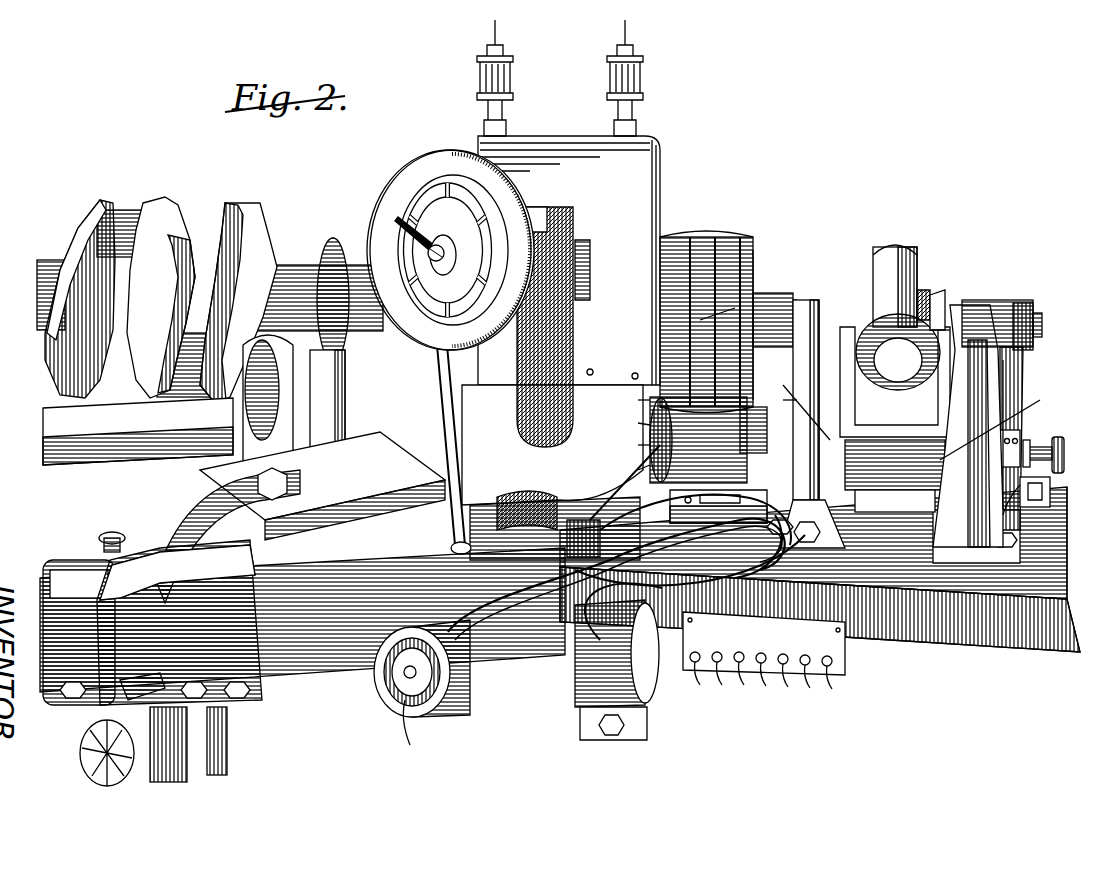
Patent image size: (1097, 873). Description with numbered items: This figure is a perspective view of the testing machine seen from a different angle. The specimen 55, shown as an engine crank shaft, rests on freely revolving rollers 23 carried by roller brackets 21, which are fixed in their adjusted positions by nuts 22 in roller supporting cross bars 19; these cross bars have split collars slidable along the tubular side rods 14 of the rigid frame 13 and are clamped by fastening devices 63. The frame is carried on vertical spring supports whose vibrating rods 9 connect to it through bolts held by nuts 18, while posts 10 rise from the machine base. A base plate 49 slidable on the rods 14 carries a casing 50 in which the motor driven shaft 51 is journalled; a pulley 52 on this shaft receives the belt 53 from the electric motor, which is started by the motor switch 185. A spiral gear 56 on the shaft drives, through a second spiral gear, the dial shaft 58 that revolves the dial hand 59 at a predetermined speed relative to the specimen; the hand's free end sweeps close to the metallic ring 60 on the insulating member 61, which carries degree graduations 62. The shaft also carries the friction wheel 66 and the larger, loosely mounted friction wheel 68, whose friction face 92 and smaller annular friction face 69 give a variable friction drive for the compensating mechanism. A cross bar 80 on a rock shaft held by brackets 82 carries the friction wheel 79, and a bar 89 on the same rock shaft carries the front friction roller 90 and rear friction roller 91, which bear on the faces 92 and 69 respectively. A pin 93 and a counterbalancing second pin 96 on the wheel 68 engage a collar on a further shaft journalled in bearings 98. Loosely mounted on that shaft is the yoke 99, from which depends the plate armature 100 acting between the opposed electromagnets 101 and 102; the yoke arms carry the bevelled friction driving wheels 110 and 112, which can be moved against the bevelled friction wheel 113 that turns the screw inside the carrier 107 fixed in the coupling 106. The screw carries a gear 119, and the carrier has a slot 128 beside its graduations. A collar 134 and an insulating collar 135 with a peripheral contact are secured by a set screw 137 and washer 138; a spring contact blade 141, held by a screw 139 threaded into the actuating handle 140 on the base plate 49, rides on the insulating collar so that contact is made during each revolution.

The specimen 55 is at (242, 212).
The side rods 14 is at (92, 463).
The rollers 23 is at (243, 403).
The pulley 52 is at (368, 386).
The belt 53 is at (432, 476).
The roller brackets 21 is at (330, 508).
The nuts 22 is at (290, 520).
The roller supporting cross bars 19 is at (285, 548).
The rigid frame 13 is at (80, 550).
The fastening devices 63 is at (252, 695).
The vibrating rods 9 is at (228, 742).
The posts 10 is at (185, 775).
The nuts 18 is at (107, 786).
The metallic ring 60 is at (402, 182).
The graduations 62 is at (436, 160).
The insulating member 61 is at (478, 150).
The dial hand 59 is at (420, 236).
The dial shaft 58 is at (449, 262).
The spiral gear 56 is at (576, 312).
The friction wheel 66 is at (686, 240).
The annular friction face 69 is at (725, 237).
The friction face 92 is at (750, 237).
The friction wheel 68 is at (753, 268).
The shaft 51 is at (717, 313).
The rear friction roller 91 is at (800, 298).
The second pin 96 is at (770, 295).
The bearings 98 is at (808, 300).
The bar 89 is at (765, 420).
The pin 93 is at (785, 352).
The electromagnets 101 is at (851, 434).
The cross bar 80 is at (631, 401).
The casing 50 is at (630, 424).
The friction wheel 79 is at (630, 446).
The front friction roller 90 is at (630, 471).
The brackets 82 is at (760, 490).
The bevelled friction driving wheel 110 is at (850, 325).
The gear 119 is at (885, 387).
The slot 128 is at (893, 248).
The coupling 106 is at (912, 300).
The carrier 107 is at (915, 270).
The bevelled friction driving wheel 112 is at (940, 292).
The bevelled friction wheel 113 is at (950, 300).
The yoke 99 is at (958, 310).
The spring contact blade 141 is at (1022, 380).
The set screw 137 is at (1022, 360).
The collar 134 is at (1000, 303).
The insulating collar 135 is at (1036, 308).
The washer 138 is at (1059, 321).
The electromagnets 102 is at (1002, 427).
The screw 139 is at (1055, 437).
The actuating handle 140 is at (1052, 482).
The plate armature 100 is at (855, 590).
The motor switch 185 is at (428, 700).
The base plate 49 is at (616, 636).